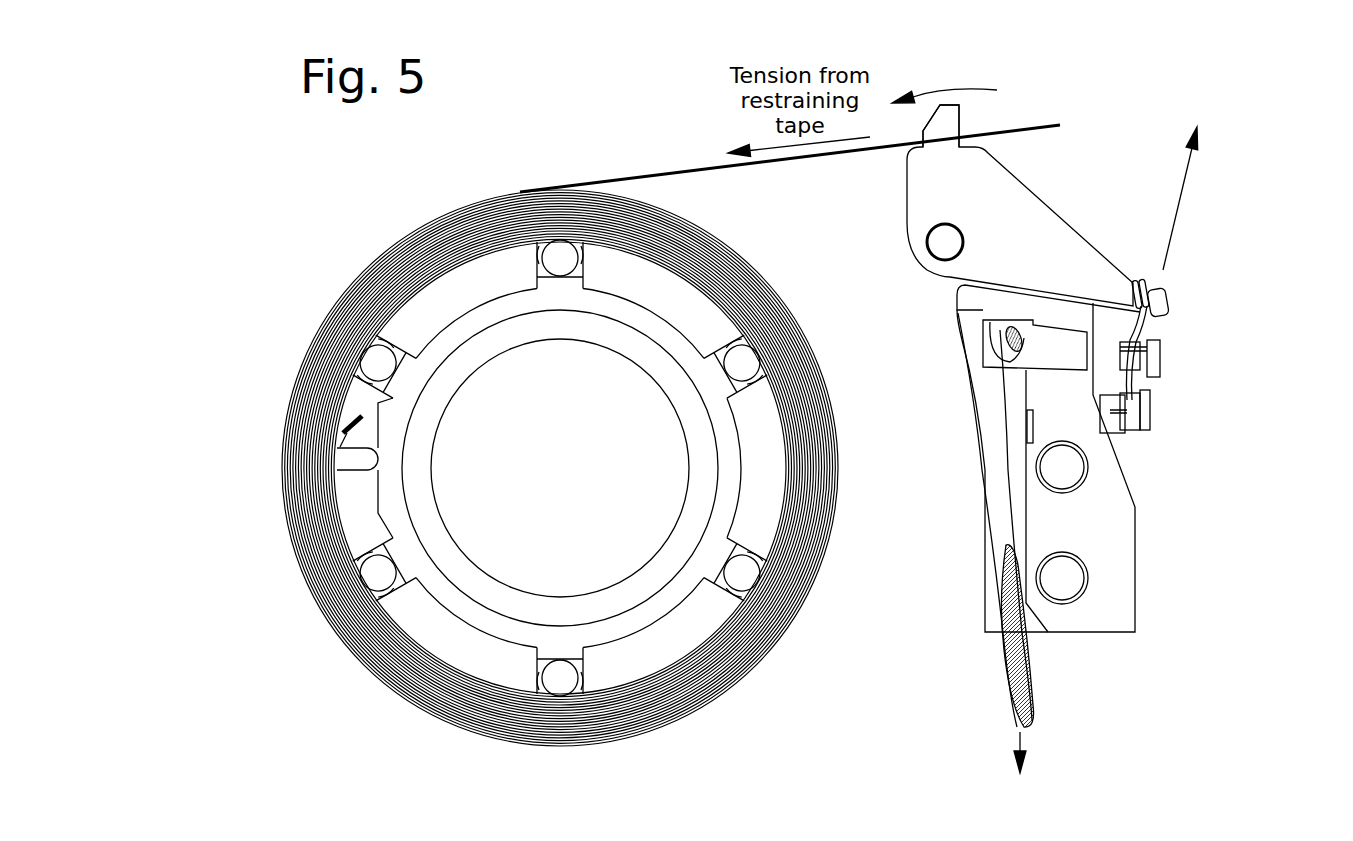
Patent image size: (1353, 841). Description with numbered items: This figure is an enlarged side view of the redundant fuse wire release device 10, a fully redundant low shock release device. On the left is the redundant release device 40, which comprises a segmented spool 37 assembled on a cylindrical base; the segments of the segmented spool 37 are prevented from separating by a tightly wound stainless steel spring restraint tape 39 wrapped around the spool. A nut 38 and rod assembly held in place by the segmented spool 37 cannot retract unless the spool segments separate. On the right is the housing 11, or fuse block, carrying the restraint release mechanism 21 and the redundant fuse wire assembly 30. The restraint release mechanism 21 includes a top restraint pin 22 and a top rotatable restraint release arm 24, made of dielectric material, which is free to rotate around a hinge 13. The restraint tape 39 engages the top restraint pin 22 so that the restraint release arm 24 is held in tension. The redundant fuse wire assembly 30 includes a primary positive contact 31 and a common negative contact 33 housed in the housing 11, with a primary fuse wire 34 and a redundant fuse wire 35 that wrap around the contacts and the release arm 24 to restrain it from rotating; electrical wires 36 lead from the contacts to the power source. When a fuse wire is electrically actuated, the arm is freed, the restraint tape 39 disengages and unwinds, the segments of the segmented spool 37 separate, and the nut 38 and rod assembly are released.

The redundant fuse wire release device 10 is at (1217, 220).
The housing 11 is at (1135, 593).
The hinge 13 is at (925, 240).
The restraint release mechanism 21 is at (1010, 204).
The top restraint pin 22 is at (963, 118).
The top rotatable restraint release arm 24 is at (1063, 223).
The redundant fuse wire assembly 30 is at (1200, 393).
The primary positive contact 31 is at (1160, 363).
The common negative contact 33 is at (1143, 427).
The primary fuse wire 34 is at (1148, 330).
The redundant fuse wire 35 is at (1145, 280).
The electrical wires 36 is at (997, 657).
The segmented spool 37 is at (647, 658).
The nut 38 is at (668, 585).
The spring restraint tape 39 is at (683, 172).
The redundant release device 40 is at (262, 484).